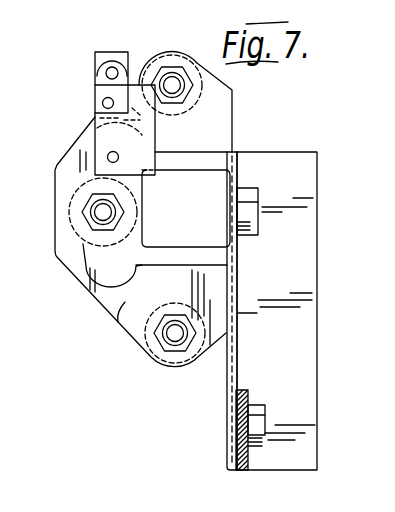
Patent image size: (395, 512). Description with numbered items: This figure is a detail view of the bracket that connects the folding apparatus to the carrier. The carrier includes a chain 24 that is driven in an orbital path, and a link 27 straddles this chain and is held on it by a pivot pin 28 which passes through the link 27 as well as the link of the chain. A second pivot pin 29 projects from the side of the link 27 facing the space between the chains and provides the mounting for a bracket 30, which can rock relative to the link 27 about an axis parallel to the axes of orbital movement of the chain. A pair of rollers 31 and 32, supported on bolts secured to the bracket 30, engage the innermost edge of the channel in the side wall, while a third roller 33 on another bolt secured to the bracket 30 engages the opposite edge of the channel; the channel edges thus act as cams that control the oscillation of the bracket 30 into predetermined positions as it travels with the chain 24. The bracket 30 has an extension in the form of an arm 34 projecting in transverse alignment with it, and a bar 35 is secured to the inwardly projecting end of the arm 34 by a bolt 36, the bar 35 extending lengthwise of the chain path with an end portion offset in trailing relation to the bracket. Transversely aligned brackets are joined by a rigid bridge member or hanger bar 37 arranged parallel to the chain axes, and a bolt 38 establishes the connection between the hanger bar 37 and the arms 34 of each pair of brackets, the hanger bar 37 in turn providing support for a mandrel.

The chain 24 is at (117, 52).
The link 27 is at (145, 138).
The pivot pin 28 is at (104, 102).
The second pivot pin 29 is at (108, 156).
The bracket 30 is at (122, 305).
The roller 31 is at (175, 52).
The roller 32 is at (140, 348).
The third roller 33 is at (70, 219).
The arm 34 is at (211, 182).
The bar 35 is at (300, 221).
The bolt 36 is at (254, 207).
The hanger bar 37 is at (248, 456).
The bolt 38 is at (259, 423).